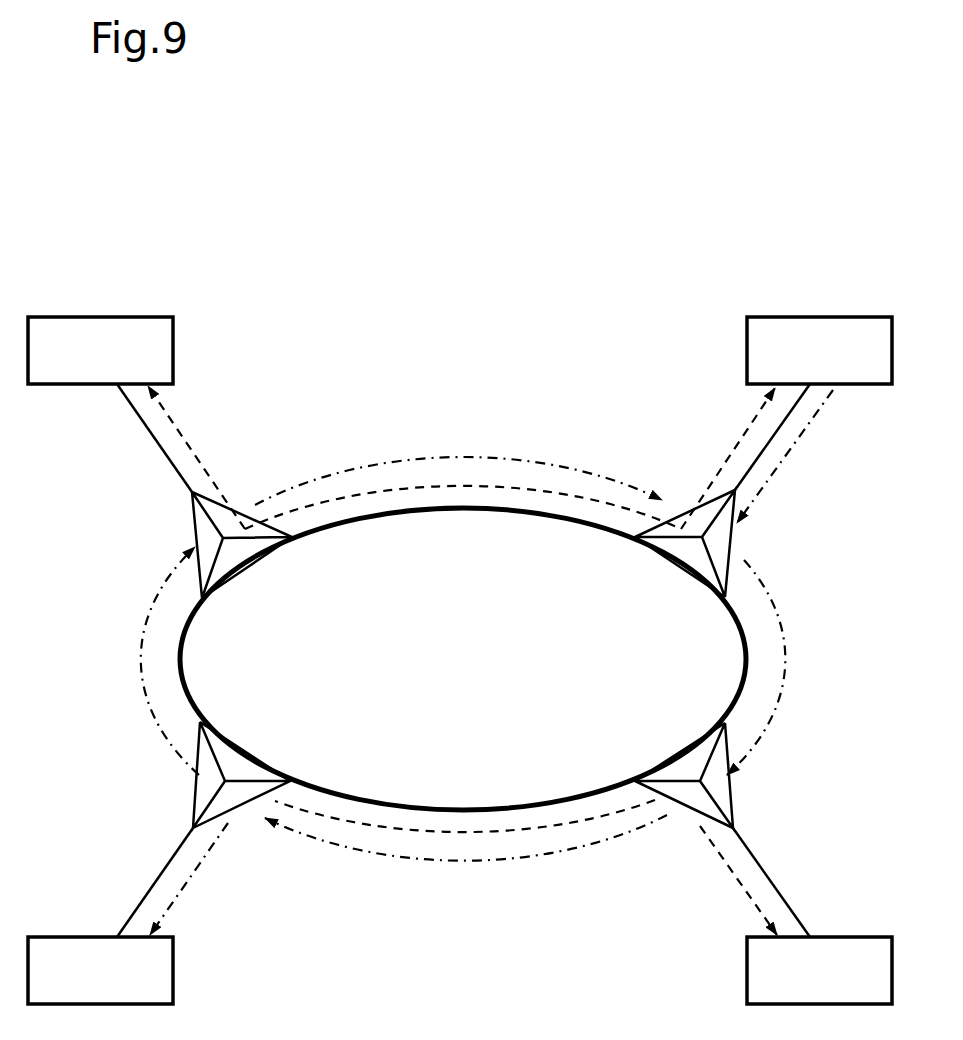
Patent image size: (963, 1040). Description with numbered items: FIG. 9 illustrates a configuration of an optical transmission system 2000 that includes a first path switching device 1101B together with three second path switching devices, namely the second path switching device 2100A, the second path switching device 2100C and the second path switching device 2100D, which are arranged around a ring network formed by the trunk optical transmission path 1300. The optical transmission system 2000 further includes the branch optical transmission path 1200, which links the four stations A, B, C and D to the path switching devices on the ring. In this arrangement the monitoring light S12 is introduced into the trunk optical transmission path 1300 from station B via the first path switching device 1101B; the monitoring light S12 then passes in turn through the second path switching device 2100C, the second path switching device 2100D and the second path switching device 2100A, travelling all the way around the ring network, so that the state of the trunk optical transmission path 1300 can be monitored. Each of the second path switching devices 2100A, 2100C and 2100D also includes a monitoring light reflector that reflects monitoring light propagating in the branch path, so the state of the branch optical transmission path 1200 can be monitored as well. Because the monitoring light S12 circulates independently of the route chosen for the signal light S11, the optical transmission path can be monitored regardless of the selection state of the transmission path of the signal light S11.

The optical transmission system 2000 is at (524, 205).
The trunk optical transmission path 1300 is at (455, 511).
The branch optical transmission path 1200 is at (160, 452).
The second path switching device 2100A is at (248, 572).
The first path switching device 1101B is at (662, 560).
The second path switching device 2100C is at (672, 755).
The second path switching device 2100D is at (250, 753).
The signal light S11 is at (384, 491).
The monitoring light S12 is at (508, 456).